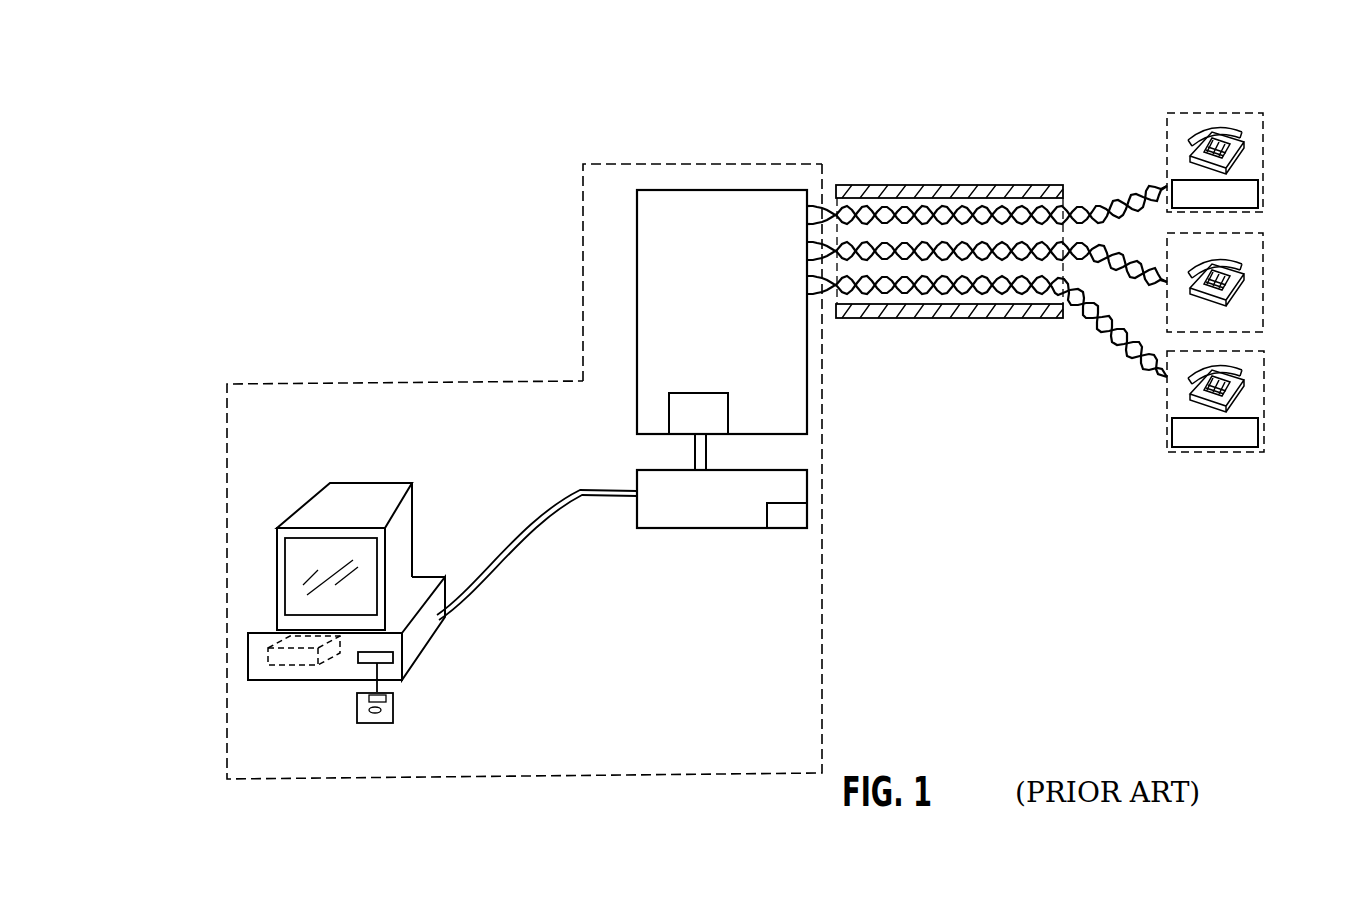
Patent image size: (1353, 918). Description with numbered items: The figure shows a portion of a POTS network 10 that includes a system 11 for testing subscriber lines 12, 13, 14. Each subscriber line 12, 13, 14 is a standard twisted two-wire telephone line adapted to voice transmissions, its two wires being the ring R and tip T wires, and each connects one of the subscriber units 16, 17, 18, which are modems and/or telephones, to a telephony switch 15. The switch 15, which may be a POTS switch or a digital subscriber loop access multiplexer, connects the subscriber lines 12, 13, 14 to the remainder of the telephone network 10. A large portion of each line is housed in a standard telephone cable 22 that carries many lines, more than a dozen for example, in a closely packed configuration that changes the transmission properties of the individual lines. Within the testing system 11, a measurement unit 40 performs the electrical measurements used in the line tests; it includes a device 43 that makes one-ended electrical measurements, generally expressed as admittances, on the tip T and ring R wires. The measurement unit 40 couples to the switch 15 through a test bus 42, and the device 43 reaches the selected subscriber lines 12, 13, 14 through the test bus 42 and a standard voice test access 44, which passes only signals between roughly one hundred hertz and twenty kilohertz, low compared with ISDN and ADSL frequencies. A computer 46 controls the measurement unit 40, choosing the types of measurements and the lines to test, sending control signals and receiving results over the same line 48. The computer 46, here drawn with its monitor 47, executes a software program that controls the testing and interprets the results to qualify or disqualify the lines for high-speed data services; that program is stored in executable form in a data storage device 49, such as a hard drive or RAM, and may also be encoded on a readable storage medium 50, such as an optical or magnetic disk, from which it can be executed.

The POTS network 10 is at (548, 247).
The system for testing subscriber lines 11 is at (822, 565).
The subscriber line 12 is at (987, 126).
The subscriber line 13 is at (1140, 310).
The subscriber line 14 is at (1105, 384).
The telephony switch 15 is at (710, 337).
The subscriber unit 16 is at (1263, 180).
The subscriber unit 17 is at (1263, 270).
The subscriber unit 18 is at (1264, 368).
The telephone cable 22 is at (940, 185).
The measurement unit 40 is at (732, 528).
The test bus 42 is at (693, 452).
The device for one-ended electrical measurements 43 is at (788, 517).
The voice test access 44 is at (688, 423).
The computer 46 is at (363, 593).
The display monitor 47 is at (312, 562).
The line 48 is at (520, 553).
The data storage device 49 is at (292, 663).
The readable storage medium 50 is at (393, 713).
The ring wire R is at (1090, 212).
The tip wire T is at (1090, 215).